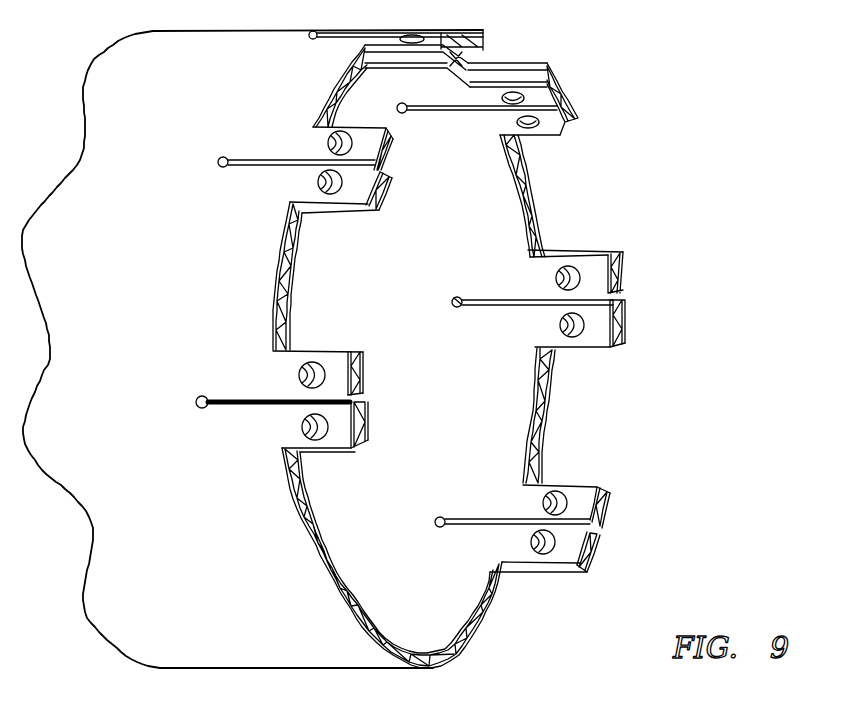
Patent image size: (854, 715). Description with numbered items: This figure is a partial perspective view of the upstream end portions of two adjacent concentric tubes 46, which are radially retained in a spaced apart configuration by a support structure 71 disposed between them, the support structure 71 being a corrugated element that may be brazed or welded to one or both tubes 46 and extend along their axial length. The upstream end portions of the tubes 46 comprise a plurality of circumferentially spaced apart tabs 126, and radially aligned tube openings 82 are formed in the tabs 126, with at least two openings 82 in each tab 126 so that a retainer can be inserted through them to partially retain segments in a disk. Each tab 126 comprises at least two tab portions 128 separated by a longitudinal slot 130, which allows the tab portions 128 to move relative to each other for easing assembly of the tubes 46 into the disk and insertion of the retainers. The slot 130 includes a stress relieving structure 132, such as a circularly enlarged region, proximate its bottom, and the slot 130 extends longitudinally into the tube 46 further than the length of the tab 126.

The tube 46 is at (520, 200).
The support structure 71 is at (540, 420).
The tube opening 82 is at (560, 503).
The tab 126 is at (636, 296).
The tab portion 128 is at (595, 275).
The longitudinal slot 130 is at (520, 308).
The stress relieving structure 132 is at (457, 297).